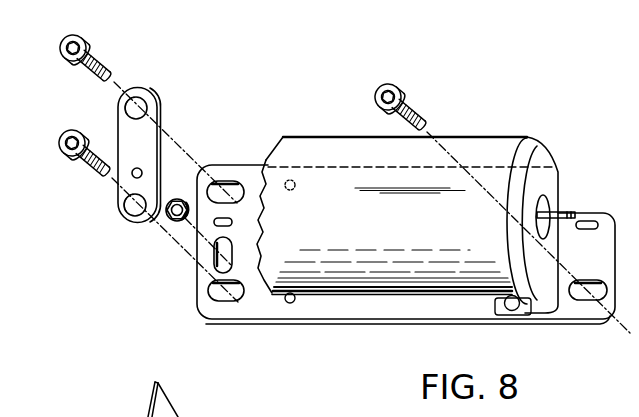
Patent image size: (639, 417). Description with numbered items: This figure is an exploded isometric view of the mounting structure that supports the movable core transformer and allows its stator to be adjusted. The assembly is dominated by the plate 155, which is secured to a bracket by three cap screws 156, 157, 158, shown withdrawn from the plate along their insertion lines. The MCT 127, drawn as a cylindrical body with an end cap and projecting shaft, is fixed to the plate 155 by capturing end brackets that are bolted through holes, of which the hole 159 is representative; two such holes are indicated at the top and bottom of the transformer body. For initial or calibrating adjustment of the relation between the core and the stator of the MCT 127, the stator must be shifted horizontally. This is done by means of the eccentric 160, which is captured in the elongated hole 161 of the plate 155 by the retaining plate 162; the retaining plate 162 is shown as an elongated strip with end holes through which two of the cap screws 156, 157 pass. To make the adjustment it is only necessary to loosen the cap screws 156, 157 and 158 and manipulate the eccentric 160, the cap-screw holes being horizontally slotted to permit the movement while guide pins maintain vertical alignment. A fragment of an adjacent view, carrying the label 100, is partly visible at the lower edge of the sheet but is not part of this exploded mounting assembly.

The movable core transformer 127 is at (480, 137).
The plate 155 is at (267, 325).
The cap screw 156 is at (97, 44).
The cap screw 157 is at (86, 176).
The cap screw 158 is at (410, 93).
The hole 159 is at (295, 190).
The eccentric 160 is at (173, 222).
The elongated hole 161 is at (213, 260).
The retaining plate 162 is at (158, 110).
The apparatus (adjacent figure) 100 is at (145, 413).